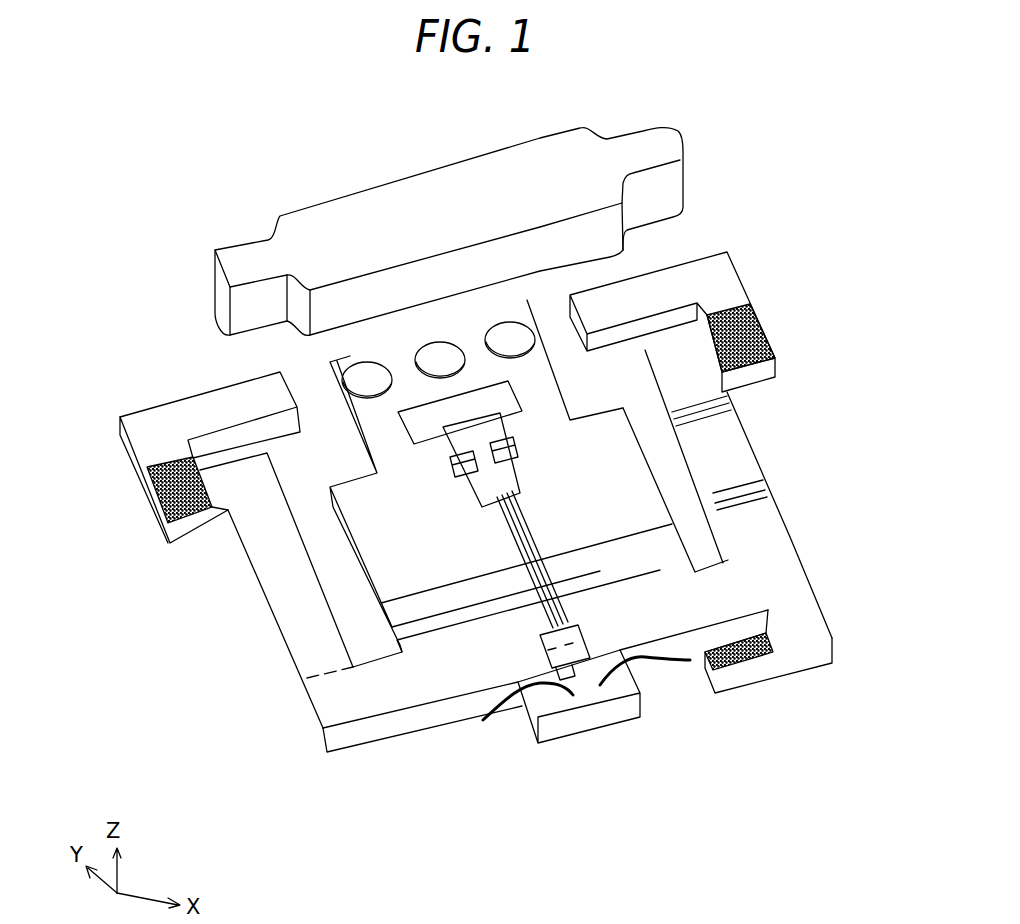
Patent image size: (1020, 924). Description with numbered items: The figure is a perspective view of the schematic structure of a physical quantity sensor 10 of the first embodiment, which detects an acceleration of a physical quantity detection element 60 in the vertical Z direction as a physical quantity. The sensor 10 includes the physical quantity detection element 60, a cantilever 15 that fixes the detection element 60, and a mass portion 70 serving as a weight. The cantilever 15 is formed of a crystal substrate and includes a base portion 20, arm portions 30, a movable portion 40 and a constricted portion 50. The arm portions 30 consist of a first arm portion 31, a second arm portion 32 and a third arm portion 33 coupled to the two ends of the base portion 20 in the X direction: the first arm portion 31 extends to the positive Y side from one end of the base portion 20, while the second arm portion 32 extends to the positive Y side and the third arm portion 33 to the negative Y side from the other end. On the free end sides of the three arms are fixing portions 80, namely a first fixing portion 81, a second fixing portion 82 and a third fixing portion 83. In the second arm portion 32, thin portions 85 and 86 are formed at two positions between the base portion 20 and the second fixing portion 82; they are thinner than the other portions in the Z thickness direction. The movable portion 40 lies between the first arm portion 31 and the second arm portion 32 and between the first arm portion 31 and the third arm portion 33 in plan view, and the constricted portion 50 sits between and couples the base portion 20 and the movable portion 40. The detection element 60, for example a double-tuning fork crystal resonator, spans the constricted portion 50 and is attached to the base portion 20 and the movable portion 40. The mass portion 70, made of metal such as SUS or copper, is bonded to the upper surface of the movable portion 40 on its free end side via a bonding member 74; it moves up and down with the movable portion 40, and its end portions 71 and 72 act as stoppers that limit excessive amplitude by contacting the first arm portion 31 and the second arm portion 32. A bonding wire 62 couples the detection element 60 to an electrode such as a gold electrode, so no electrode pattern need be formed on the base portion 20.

The physical quantity sensor 10 is at (803, 195).
The cantilever 15 is at (337, 710).
The base portion 20 is at (693, 608).
The arm portion 30 is at (531, 502).
The first arm portion 31 is at (280, 597).
The second arm portion 32 is at (750, 487).
The third arm portion 33 is at (813, 630).
The movable portion 40 is at (622, 458).
The constricted portion 50 is at (620, 558).
The physical quantity detection element 60 is at (537, 552).
The bonding wire 62 is at (512, 707).
The mass portion 70 is at (437, 193).
The end portion 71 is at (243, 257).
The end portion 72 is at (648, 150).
The bonding member 74 is at (512, 333).
The fixing portion 80 is at (443, 514).
The first fixing portion 81 is at (170, 497).
The second fixing portion 82 is at (750, 333).
The third fixing portion 83 is at (770, 663).
The thin portion 85 is at (767, 493).
The thin portion 86 is at (727, 400).